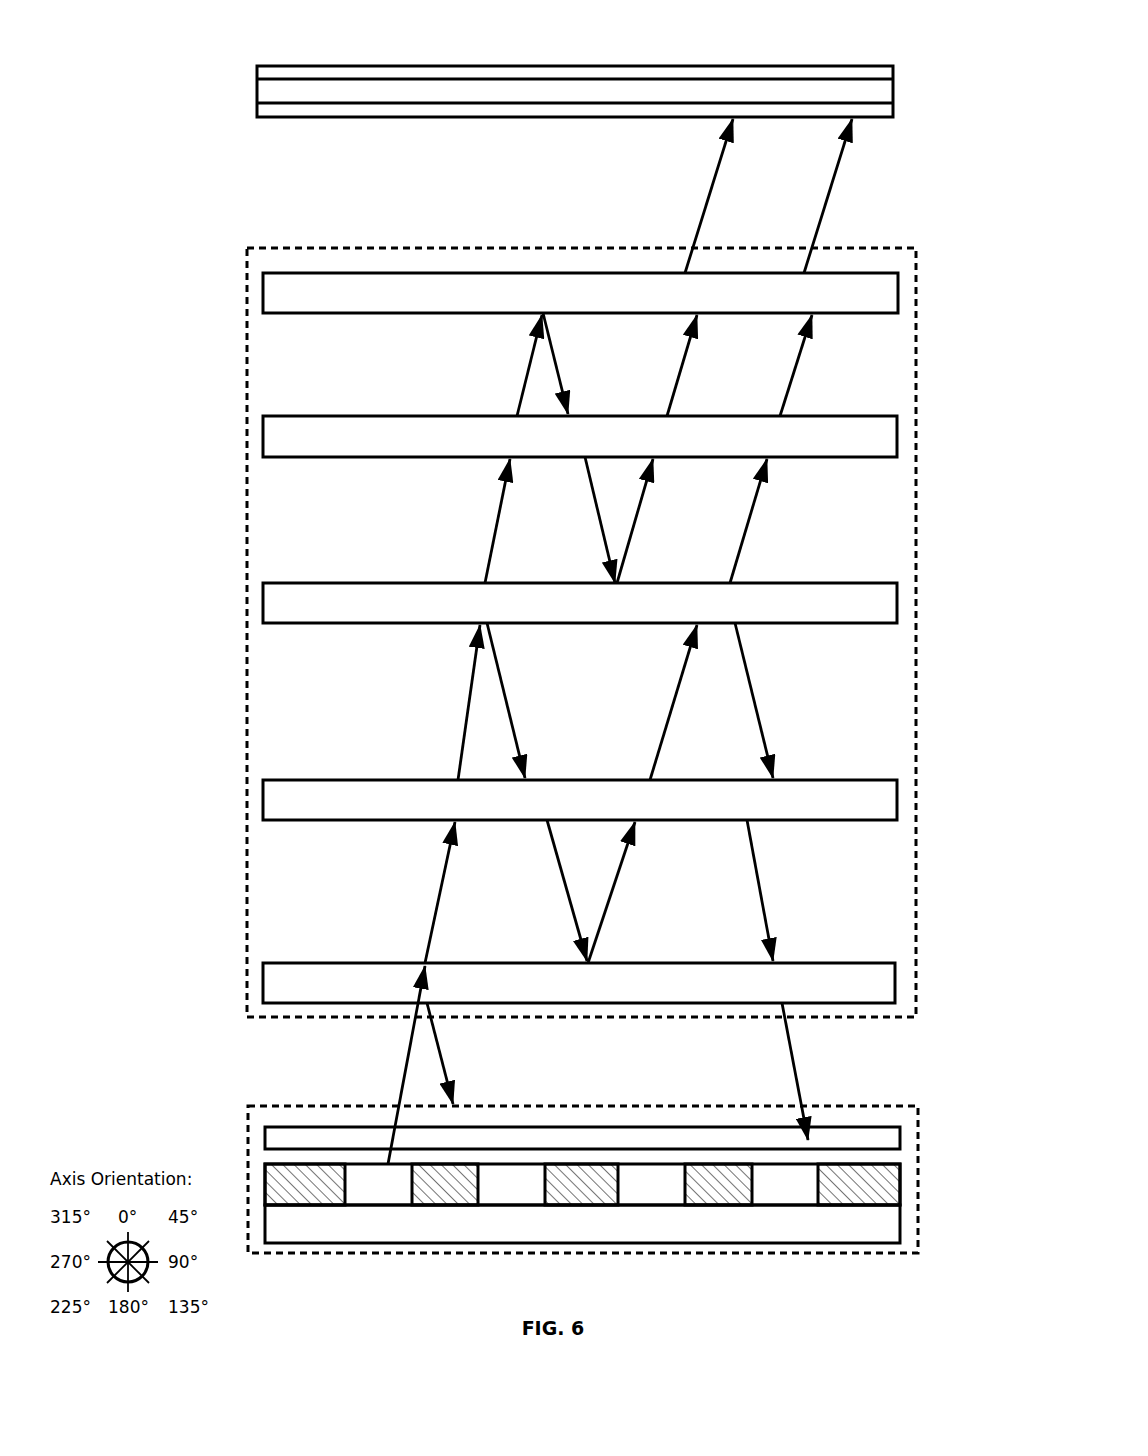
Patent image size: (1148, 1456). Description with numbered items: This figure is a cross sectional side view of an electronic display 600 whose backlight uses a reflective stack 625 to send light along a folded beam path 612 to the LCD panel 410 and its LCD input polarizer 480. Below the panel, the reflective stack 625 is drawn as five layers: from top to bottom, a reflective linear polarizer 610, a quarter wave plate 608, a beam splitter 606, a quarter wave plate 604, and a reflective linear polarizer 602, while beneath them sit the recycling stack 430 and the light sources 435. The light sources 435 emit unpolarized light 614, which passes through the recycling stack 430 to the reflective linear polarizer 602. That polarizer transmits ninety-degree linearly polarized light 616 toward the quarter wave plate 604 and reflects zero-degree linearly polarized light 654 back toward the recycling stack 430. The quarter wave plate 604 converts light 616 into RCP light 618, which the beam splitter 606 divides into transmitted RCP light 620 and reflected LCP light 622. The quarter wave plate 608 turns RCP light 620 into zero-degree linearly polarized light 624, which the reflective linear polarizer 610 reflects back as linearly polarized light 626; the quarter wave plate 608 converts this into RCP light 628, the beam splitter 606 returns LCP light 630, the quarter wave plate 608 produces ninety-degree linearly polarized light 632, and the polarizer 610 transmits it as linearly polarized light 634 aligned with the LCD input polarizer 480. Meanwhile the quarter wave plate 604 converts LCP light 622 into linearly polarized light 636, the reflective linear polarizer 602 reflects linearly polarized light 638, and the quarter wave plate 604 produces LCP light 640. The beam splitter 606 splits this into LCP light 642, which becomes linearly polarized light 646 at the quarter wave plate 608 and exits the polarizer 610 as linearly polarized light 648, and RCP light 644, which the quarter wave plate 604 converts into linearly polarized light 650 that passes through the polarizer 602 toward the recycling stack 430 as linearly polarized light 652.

The electronic display 600 is at (488, 100).
The LCD panel 410 is at (257, 87).
The LCD input polarizer 480 is at (257, 118).
The folded beam path 612 is at (527, 332).
The reflective stack 625 is at (247, 690).
The reflective linear polarizer 610 is at (263, 293).
The quarter wave plate 608 is at (263, 438).
The beam splitter 606 is at (263, 607).
The quarter wave plate 604 is at (263, 805).
The reflective linear polarizer 602 is at (263, 995).
The recycling stack 430 is at (250, 1153).
The light source 435 is at (370, 1192).
The unpolarized light 614 is at (400, 1087).
The linearly polarized light 616 is at (440, 917).
The RCP light 618 is at (463, 722).
The RCP light 620 is at (496, 527).
The LCP light 622 is at (512, 710).
The linearly polarized light 624 is at (523, 378).
The linearly polarized light 626 is at (563, 384).
The RCP light 628 is at (607, 558).
The LCP light 630 is at (636, 527).
The linearly polarized light 632 is at (674, 402).
The linearly polarized light 634 is at (697, 225).
The linearly polarized light 636 is at (572, 908).
The linearly polarized light 638 is at (604, 913).
The LCP light 640 is at (657, 753).
The LCP light 642 is at (740, 558).
The RCP light 644 is at (755, 708).
The linearly polarized light 646 is at (785, 405).
The linearly polarized light 648 is at (823, 213).
The linearly polarized light 650 is at (766, 912).
The linearly polarized light 652 is at (803, 1093).
The linearly polarized light 654 is at (460, 1097).